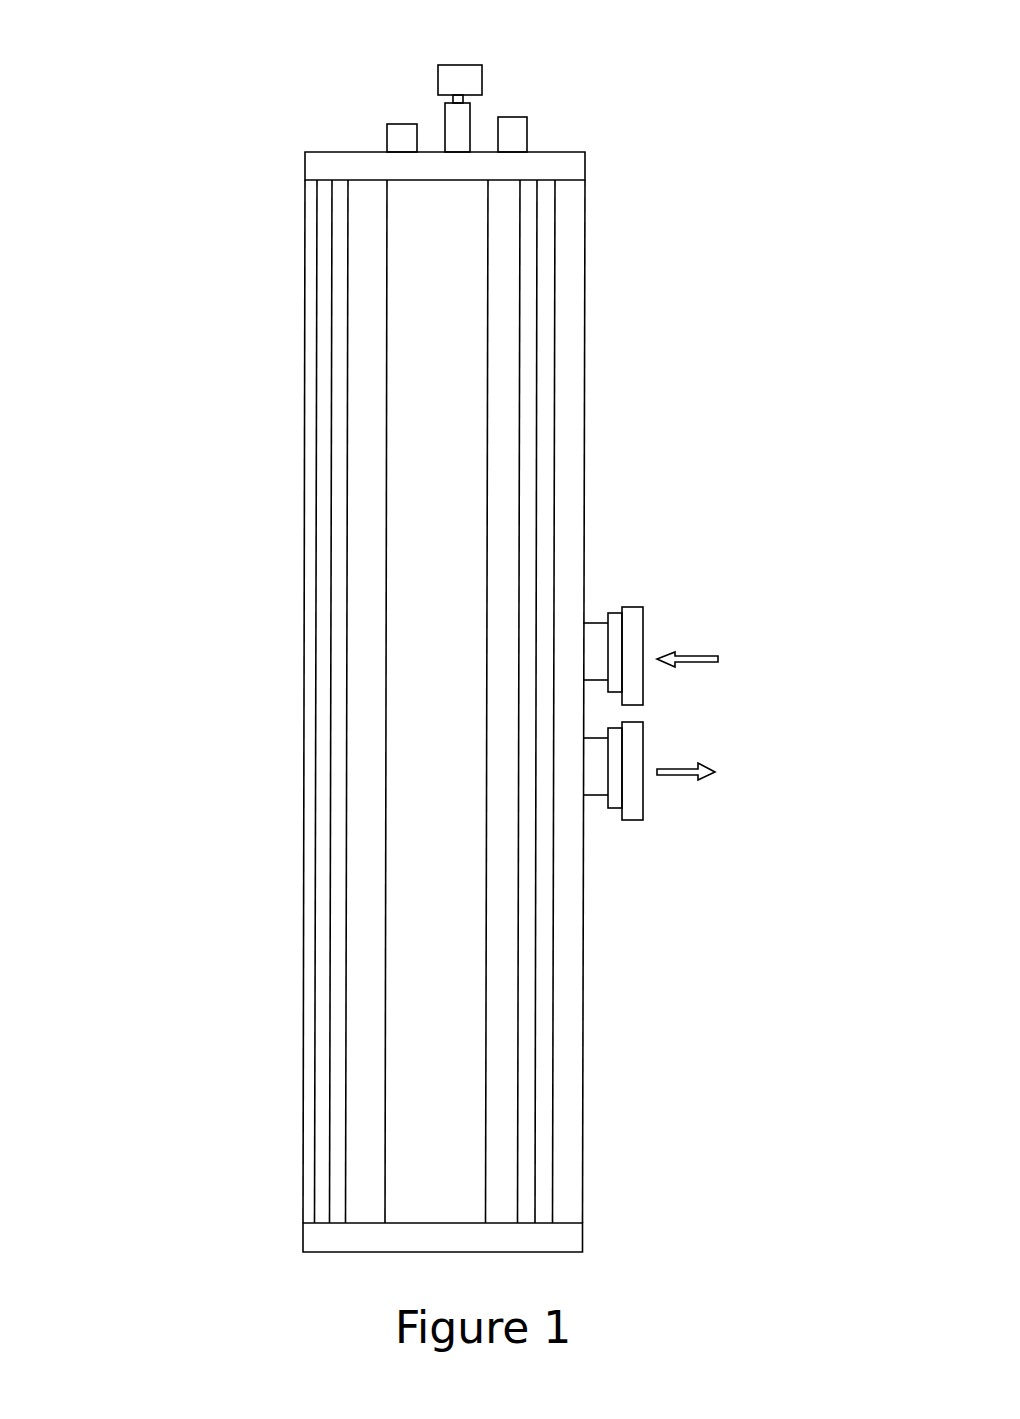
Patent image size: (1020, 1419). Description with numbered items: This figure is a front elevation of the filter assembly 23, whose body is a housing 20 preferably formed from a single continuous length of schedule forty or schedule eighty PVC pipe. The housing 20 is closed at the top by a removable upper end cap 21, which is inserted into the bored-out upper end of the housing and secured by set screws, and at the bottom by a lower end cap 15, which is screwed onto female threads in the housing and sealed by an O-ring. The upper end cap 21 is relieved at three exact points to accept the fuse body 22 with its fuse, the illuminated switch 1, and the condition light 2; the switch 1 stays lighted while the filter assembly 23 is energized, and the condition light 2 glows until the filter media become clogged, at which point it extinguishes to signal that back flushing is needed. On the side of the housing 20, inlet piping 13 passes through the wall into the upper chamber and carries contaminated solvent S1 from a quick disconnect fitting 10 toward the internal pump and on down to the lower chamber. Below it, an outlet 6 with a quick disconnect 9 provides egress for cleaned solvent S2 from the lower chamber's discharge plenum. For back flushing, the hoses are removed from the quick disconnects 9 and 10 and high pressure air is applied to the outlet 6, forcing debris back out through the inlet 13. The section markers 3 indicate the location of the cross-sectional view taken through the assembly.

The illuminated switch 1 is at (475, 70).
The condition light 2 is at (520, 123).
The section line 3- 3 is at (472, 623).
The outlet 6 is at (597, 777).
The quick disconnect 9 is at (642, 822).
The quick disconnect fitting 10 is at (642, 607).
The inlet piping 13 is at (597, 632).
The lower end cap 15 is at (313, 1233).
The housing 20 is at (303, 420).
The upper end cap 21 is at (320, 167).
The fuse body 22 is at (400, 123).
The filter assembly 23 is at (760, 318).
The contaminated solvent S1 is at (693, 656).
The outlet stream S2 is at (678, 766).